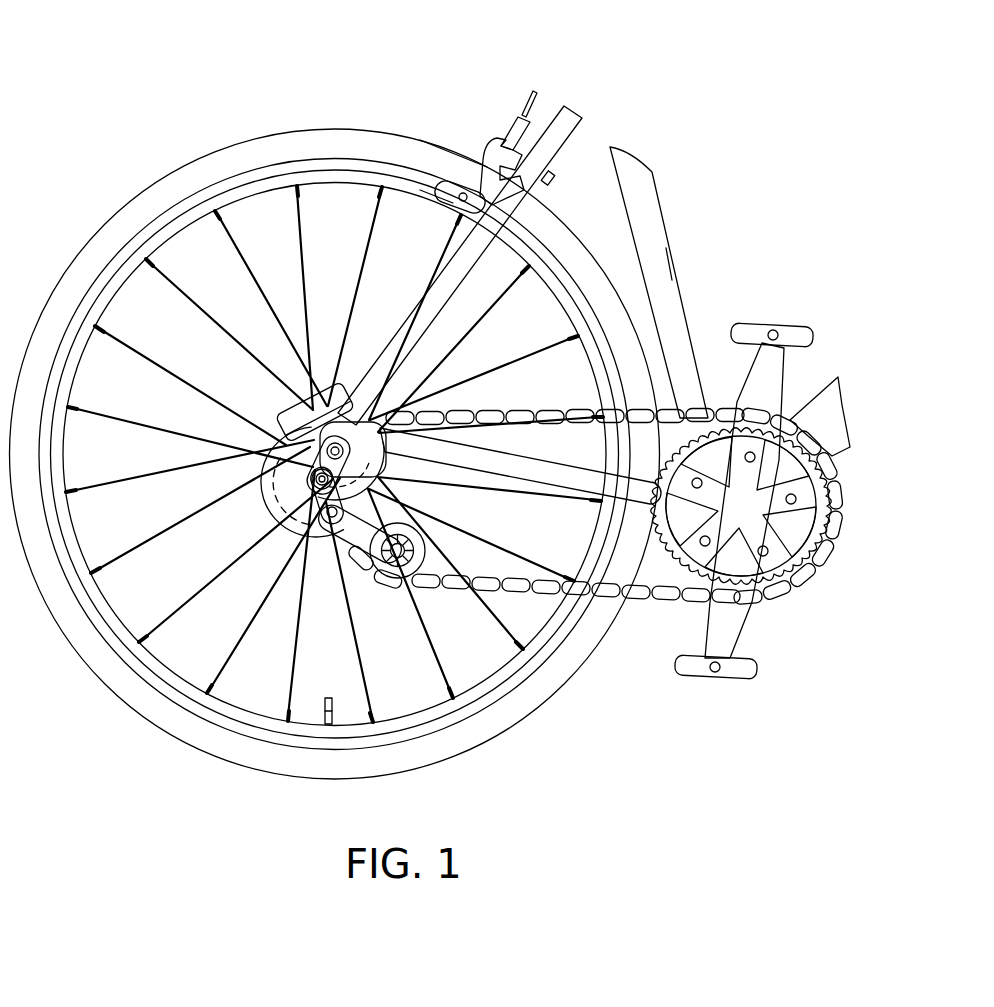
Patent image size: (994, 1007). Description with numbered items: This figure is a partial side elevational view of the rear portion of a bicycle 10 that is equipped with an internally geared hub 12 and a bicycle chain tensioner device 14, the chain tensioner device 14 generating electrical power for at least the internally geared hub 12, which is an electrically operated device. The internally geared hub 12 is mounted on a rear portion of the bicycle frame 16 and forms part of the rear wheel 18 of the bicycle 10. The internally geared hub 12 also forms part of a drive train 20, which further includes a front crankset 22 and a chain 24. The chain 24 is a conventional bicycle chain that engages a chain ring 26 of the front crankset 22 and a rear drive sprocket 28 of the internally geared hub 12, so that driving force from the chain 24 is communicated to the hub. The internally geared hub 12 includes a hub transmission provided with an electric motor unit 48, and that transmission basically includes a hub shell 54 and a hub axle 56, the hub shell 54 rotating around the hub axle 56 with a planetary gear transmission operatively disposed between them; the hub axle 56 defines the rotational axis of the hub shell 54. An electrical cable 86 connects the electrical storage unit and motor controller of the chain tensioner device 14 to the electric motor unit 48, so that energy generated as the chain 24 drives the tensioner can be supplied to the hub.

The bicycle 10 is at (700, 212).
The internally geared hub 12 is at (280, 490).
The bicycle chain tensioner device 14 is at (398, 605).
The bicycle frame 16 is at (388, 360).
The rear wheel 18 is at (162, 182).
The drive train 20 is at (767, 628).
The front crankset 22 is at (822, 544).
The chain 24 is at (657, 608).
The chain ring 26 is at (795, 590).
The rear drive sprocket 28 is at (388, 487).
The electric motor unit 48 is at (282, 398).
The hub shell 54 is at (392, 433).
The hub axle 56 is at (353, 408).
The electrical cable 86 is at (272, 502).